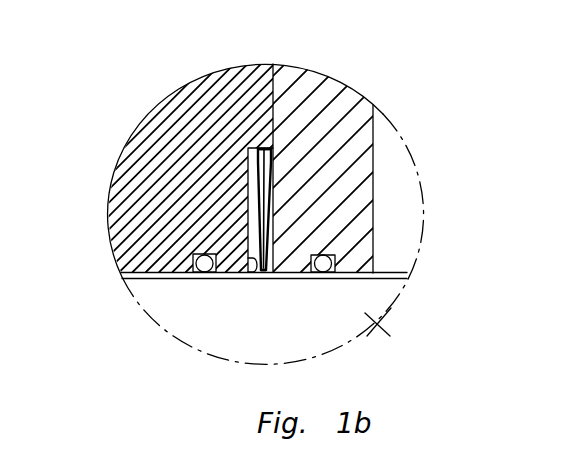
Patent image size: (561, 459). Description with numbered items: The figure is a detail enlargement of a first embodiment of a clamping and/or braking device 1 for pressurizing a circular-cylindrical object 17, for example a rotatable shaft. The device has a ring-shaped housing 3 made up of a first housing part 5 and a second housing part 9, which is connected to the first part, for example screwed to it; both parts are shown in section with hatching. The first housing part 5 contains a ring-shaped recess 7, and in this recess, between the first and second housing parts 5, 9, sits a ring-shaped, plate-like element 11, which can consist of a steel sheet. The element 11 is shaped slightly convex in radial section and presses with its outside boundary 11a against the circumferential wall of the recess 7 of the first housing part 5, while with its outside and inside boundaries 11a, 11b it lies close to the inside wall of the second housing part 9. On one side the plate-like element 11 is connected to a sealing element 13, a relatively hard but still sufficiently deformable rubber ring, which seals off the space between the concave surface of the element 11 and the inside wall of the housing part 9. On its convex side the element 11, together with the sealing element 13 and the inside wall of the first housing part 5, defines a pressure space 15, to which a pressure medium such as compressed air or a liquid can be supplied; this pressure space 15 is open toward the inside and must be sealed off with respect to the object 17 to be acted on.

The clamping and/or braking device 1 is at (90, 147).
The ring-shaped housing 3 is at (264, 57).
The first housing part 5 is at (152, 221).
The ring-shaped recess 7 is at (252, 279).
The second housing part 9 is at (345, 213).
The ring-shaped, plate-like element 11 is at (278, 228).
The outside boundary 11a is at (275, 147).
The inside boundary 11b is at (263, 273).
The sealing element 13 is at (198, 276).
The pressure space 15 is at (256, 168).
The object 17 is at (394, 331).